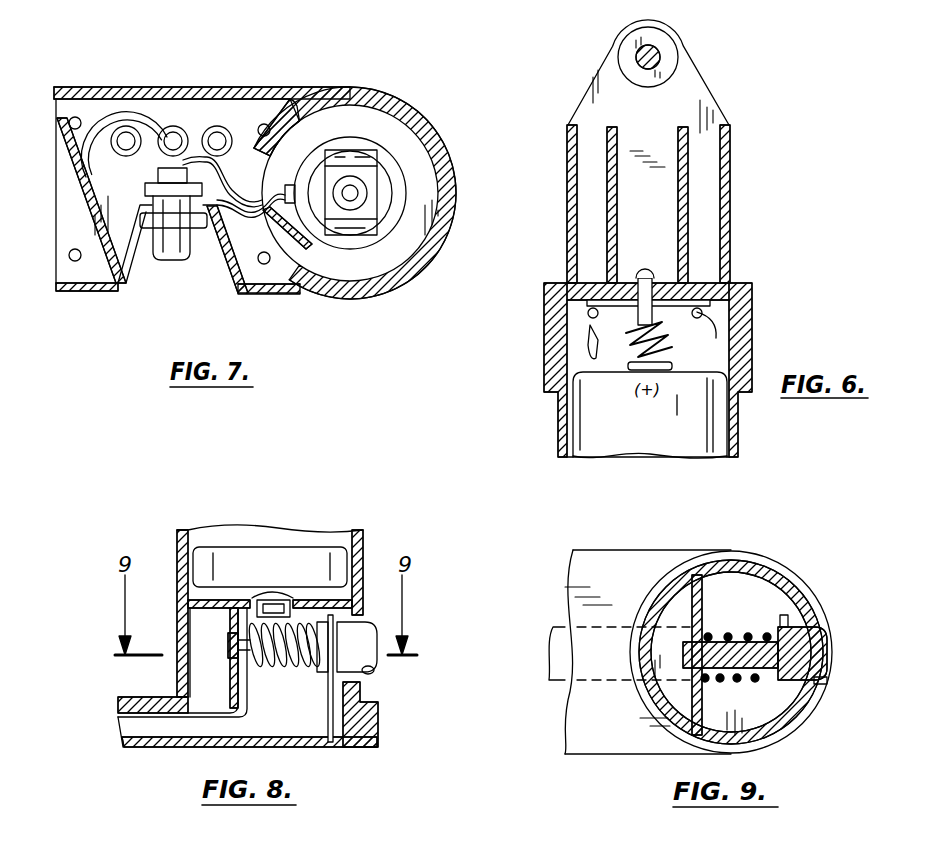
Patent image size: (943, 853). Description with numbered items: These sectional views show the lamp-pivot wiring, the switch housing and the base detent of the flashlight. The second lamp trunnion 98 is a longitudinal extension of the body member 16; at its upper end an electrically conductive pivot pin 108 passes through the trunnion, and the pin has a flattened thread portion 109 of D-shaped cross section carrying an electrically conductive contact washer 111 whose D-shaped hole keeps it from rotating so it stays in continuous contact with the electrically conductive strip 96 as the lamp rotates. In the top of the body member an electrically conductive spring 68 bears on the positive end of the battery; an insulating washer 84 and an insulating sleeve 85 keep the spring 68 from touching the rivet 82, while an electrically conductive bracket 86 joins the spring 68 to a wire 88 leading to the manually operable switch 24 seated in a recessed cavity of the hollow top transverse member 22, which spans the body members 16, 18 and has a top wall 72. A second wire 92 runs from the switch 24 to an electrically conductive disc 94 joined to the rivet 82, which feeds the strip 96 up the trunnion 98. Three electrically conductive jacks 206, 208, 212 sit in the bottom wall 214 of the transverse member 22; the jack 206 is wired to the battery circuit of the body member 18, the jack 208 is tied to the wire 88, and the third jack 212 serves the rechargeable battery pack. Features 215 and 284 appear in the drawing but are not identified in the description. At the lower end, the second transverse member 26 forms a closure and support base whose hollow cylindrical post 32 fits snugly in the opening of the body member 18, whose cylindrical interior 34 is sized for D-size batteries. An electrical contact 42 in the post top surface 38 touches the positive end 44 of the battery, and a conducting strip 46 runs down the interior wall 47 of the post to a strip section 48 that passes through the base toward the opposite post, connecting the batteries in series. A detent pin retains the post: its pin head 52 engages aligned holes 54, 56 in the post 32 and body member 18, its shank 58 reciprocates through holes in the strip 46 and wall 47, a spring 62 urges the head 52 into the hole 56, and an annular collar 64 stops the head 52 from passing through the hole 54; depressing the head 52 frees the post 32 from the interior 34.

In FIG. 6, the body member 16 is at (739, 442).
In FIG. 8, the body member 18 is at (360, 530).
In FIG. 9, the body member 18 is at (737, 561).
In FIG. 7, the top transverse member 22 is at (76, 292).
In FIG. 7, the manually operable switch 24 is at (167, 262).
In FIG. 8, the second transverse member 26 is at (122, 703).
In FIG. 9, the second transverse member 26 is at (622, 557).
In FIG. 8, the hollow cylindrical post 32 is at (183, 660).
In FIG. 9, the hollow cylindrical post 32 is at (753, 573).
In FIG. 8, the interior of body member 34 is at (225, 597).
In FIG. 8, the top surface of post 38 is at (313, 590).
In FIG. 8, the electrical contact 42 is at (290, 590).
In FIG. 8, the positive end of battery 44 is at (266, 592).
In FIG. 8, the electrical conducting strip 46 is at (250, 713).
In FIG. 9, the electrical conducting strip 46 is at (705, 630).
In FIG. 8, the interior wall of post 47 is at (235, 690).
In FIG. 9, the interior wall of post 47 is at (677, 740).
In FIG. 8, the strip section 48 is at (123, 717).
In FIG. 9, the strip section 48 is at (547, 677).
In FIG. 8, the pin head 52 is at (378, 668).
In FIG. 9, the pin head 52 is at (818, 653).
In FIG. 8, the post hole 54 is at (323, 677).
In FIG. 9, the post hole 54 is at (793, 630).
In FIG. 8, the body member hole 56 is at (370, 675).
In FIG. 9, the body member hole 56 is at (827, 681).
In FIG. 8, the pin shank 58 is at (232, 647).
In FIG. 9, the pin shank 58 is at (677, 683).
In FIG. 8, the spring 62 is at (297, 667).
In FIG. 9, the spring 62 is at (728, 632).
In FIG. 8, the annular collar 64 is at (334, 747).
In FIG. 9, the annular collar 64 is at (793, 720).
In FIG. 7, the electrically conductive spring 68 is at (388, 178).
In FIG. 6, the electrically conductive spring 68 is at (672, 345).
In FIG. 7, the transverse member top wall 72 is at (98, 268).
In FIG. 6, the rivet 82 is at (643, 269).
In FIG. 7, the insulating washer 84 is at (400, 196).
In FIG. 6, the insulating washer 84 is at (710, 300).
In FIG. 6, the insulating sleeve 85 is at (617, 330).
In FIG. 6, the electrically conductive bracket 86 is at (697, 320).
In FIG. 7, the wire 88 is at (224, 180).
In FIG. 6, the wire 88 is at (585, 358).
In FIG. 7, the second wire 92 is at (228, 240).
In FIG. 6, the electrically conductive disc 94 is at (597, 284).
In FIG. 6, the electrically conductive strip 96 is at (665, 185).
In FIG. 6, the second lamp trunnion 98 is at (724, 120).
In FIG. 6, the pivot pin 108 is at (660, 37).
In FIG. 6, the flattened thread portion 109 is at (636, 56).
In FIG. 6, the contact washer 111 is at (672, 58).
In FIG. 7, the first electrically conductive jack 206 is at (126, 125).
In FIG. 7, the second electrically conductive jack 208 is at (219, 126).
In FIG. 7, the third jack 212 is at (175, 126).
In FIG. 7, the bottom wall 214 is at (255, 151).
In FIG. 7, the web 215 is at (78, 217).
In FIG. 7, the conduit 284 is at (100, 108).